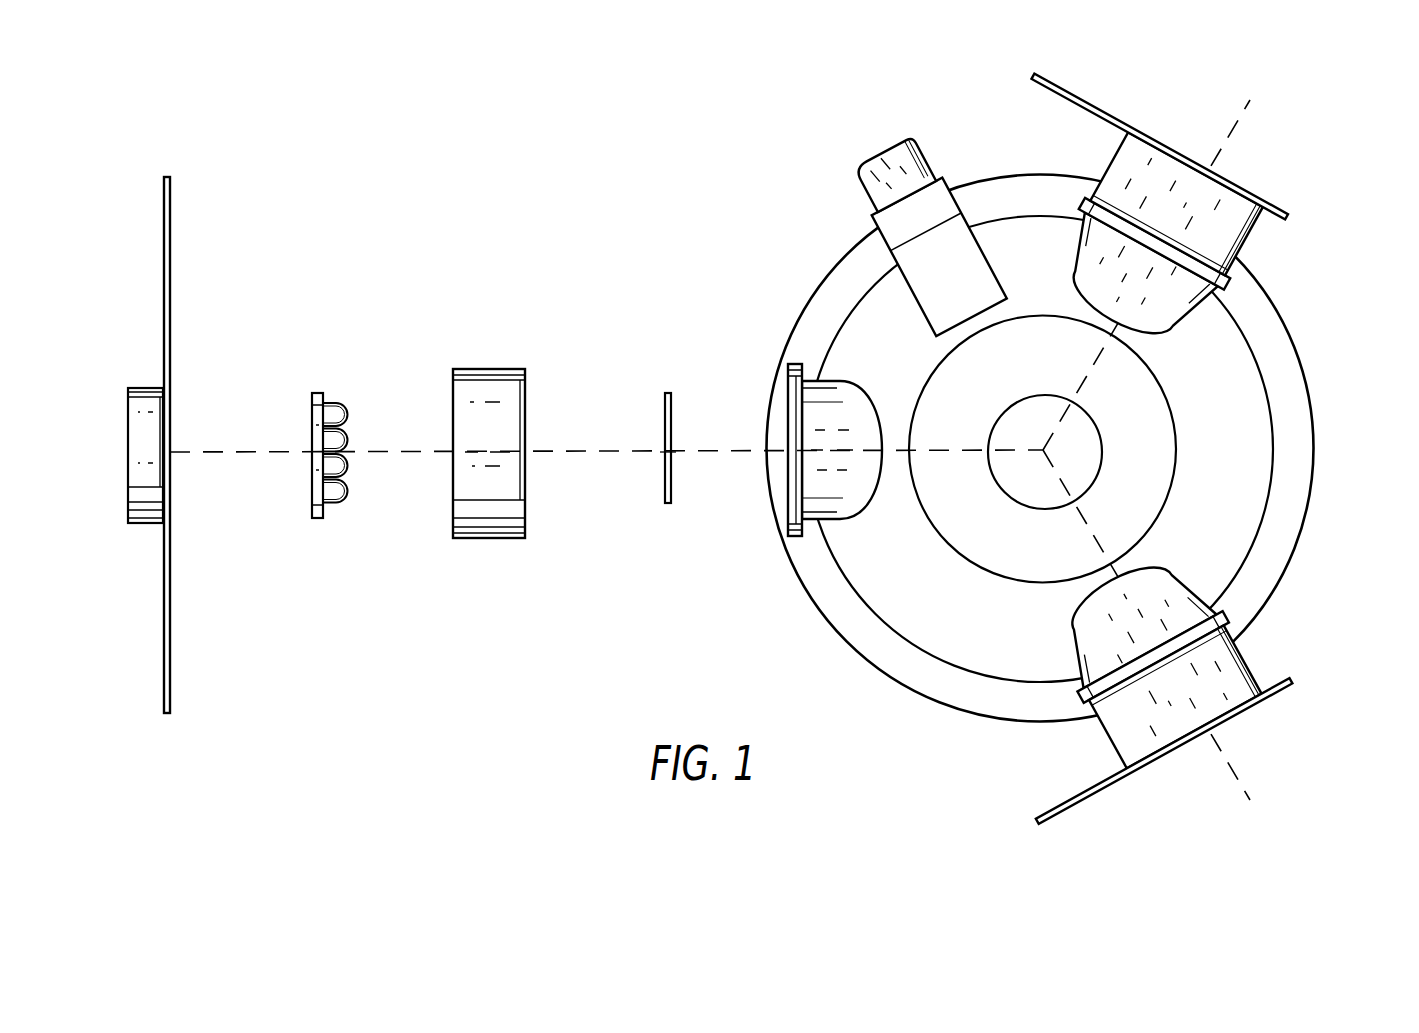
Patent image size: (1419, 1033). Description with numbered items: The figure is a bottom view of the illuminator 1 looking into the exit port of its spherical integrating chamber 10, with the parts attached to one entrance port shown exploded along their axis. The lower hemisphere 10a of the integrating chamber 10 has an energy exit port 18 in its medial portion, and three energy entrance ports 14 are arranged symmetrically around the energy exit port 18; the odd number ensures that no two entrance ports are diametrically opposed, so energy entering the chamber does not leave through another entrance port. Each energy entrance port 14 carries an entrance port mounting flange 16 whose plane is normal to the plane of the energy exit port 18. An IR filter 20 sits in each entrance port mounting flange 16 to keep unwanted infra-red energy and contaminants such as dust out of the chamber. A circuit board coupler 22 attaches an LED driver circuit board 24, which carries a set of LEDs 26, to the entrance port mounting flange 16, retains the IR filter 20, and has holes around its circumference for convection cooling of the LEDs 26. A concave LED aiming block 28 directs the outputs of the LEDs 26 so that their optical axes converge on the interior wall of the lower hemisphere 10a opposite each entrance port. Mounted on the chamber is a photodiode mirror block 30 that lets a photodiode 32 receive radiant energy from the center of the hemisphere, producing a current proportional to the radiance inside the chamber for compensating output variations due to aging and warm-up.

The illuminator 1 is at (507, 142).
The integrating chamber 10 is at (1285, 311).
The lower hemisphere 10a is at (1250, 352).
The energy entrance port 14 is at (845, 390).
The entrance port mounting flange 16 is at (790, 537).
The energy exit port 18 is at (1080, 434).
The IR filter 20 is at (665, 494).
The circuit board coupler 22 is at (497, 530).
The LED driver circuit board 24 is at (171, 256).
The light emitting diode 26 is at (343, 400).
The LED aiming block 28 is at (310, 509).
The photodiode mirror block 30 is at (897, 256).
The photodiode 32 is at (858, 168).